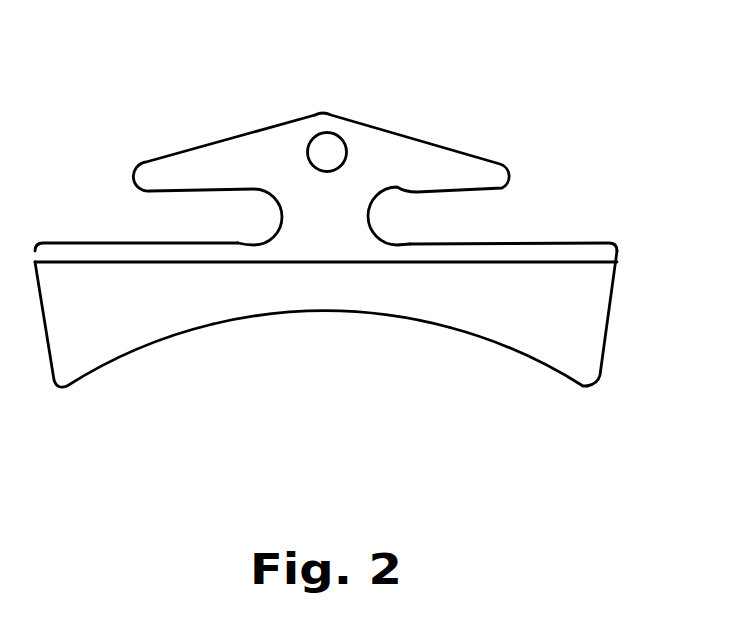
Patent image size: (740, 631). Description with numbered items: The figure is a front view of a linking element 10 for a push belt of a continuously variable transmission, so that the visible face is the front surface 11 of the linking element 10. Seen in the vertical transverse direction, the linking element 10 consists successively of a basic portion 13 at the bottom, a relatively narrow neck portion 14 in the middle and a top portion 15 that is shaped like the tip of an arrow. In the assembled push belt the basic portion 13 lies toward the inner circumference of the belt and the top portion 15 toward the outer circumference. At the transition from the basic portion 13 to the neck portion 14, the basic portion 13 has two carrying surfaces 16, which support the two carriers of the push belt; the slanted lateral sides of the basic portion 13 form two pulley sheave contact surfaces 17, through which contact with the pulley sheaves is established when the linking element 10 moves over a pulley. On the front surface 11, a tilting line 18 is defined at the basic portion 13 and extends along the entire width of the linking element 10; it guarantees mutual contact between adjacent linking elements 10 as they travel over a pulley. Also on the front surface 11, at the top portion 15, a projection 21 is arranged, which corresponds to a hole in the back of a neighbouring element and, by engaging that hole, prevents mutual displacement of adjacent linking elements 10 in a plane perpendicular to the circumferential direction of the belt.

The linking element 10 is at (130, 122).
The front surface 11 is at (118, 340).
The basic portion 13 is at (550, 327).
The neck portion 14 is at (312, 217).
The top portion 15 is at (460, 170).
The carrying surfaces 16 is at (557, 240).
The pulley sheave contact surfaces 17 is at (608, 320).
The tilting line 18 is at (207, 262).
The projection 21 is at (331, 152).